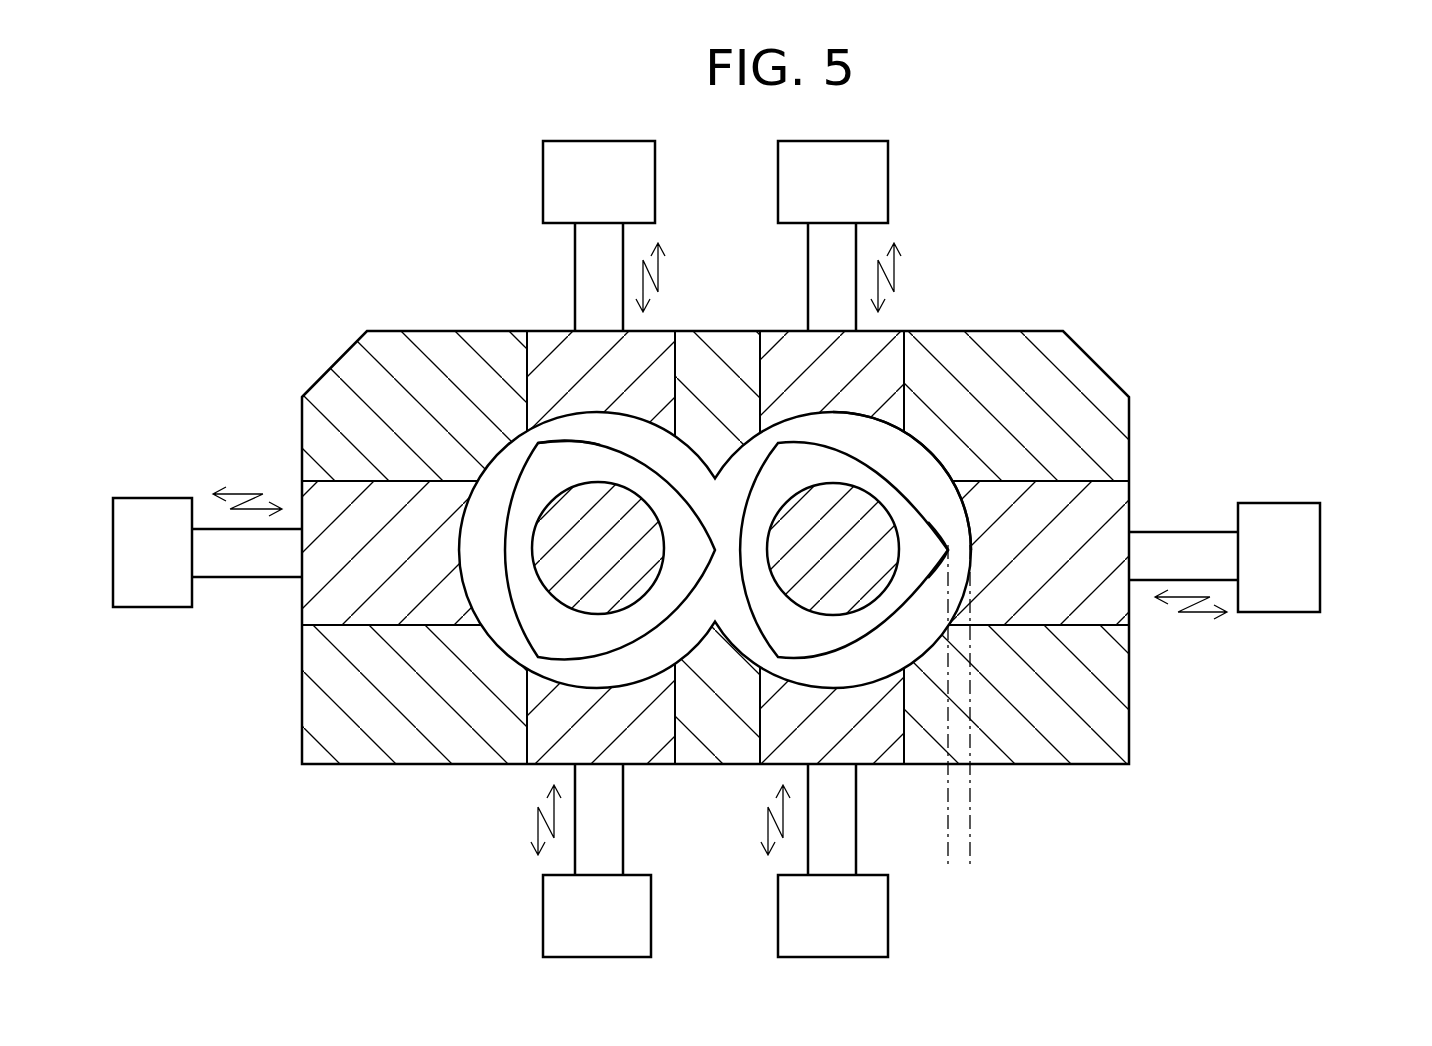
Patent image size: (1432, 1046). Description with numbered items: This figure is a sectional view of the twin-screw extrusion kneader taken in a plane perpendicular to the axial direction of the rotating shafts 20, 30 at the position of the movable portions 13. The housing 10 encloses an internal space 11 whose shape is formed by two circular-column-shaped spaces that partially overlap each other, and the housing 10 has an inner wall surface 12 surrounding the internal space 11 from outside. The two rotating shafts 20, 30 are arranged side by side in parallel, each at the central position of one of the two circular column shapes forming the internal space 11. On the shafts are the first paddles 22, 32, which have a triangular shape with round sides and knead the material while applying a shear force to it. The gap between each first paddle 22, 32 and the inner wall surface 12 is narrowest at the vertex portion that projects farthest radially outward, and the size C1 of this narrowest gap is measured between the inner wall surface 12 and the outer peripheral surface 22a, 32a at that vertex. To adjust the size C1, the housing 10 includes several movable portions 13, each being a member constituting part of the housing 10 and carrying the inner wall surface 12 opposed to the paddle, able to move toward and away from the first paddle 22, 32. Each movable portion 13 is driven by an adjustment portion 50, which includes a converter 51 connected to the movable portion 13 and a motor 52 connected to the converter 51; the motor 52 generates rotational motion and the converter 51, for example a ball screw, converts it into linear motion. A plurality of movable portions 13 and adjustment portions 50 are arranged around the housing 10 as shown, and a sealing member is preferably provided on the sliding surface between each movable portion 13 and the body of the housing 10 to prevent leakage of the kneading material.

The housing 10 is at (1058, 395).
The internal space 11 is at (858, 435).
The inner wall surface 12 is at (922, 472).
The movable portion 13 is at (1118, 505).
The rotating shaft 20 is at (960, 640).
The first paddle 22 is at (960, 640).
The outer peripheral surface 22a is at (948, 552).
The rotating shaft 30 is at (558, 545).
The first paddle 32 is at (558, 545).
The outer peripheral surface 32a is at (540, 443).
The adjustment portion 50 is at (1277, 522).
The converter 51 is at (1190, 532).
The motor 52 is at (1265, 508).
The size of the narrowest gap C1 is at (893, 852).